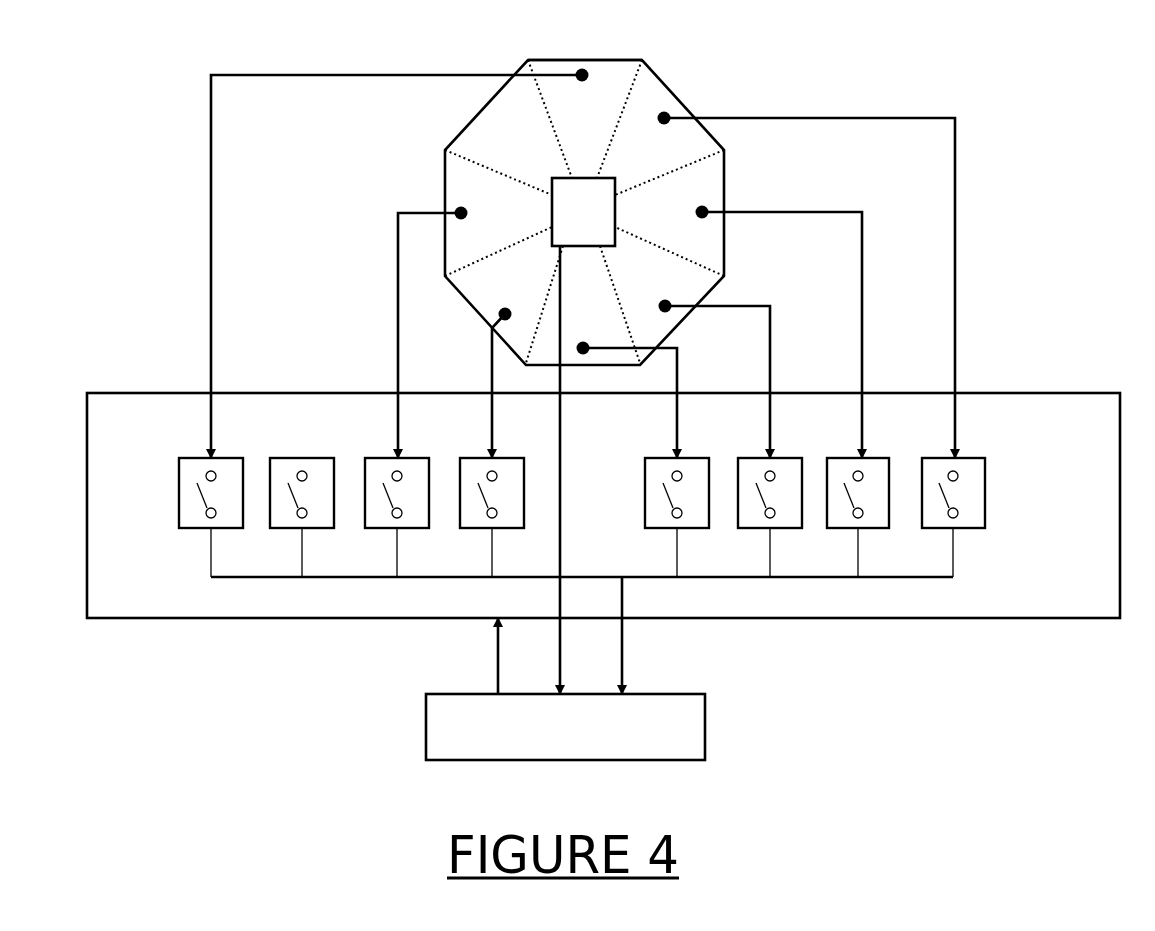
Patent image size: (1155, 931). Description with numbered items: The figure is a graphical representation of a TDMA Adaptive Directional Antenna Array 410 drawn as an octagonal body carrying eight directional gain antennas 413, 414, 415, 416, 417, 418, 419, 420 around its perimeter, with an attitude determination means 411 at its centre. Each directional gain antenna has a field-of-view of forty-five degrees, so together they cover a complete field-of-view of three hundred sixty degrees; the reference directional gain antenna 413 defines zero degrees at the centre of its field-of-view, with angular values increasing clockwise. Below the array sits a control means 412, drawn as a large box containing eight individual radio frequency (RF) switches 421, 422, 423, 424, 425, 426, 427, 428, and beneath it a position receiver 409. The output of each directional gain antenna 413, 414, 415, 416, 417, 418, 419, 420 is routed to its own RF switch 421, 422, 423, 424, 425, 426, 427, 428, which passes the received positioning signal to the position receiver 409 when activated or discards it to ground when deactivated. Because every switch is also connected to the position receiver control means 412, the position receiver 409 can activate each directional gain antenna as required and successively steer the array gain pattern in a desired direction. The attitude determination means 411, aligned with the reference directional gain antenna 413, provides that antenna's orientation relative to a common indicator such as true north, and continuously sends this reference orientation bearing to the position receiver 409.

The position receiver 409 is at (431, 764).
The TDMA Adaptive Directional Antenna Array 410 is at (644, 50).
The attitude determination means 411 is at (622, 207).
The control means 412 is at (107, 620).
The reference directional gain antenna 413 is at (520, 65).
The directional gain antenna 414 is at (547, 55).
The directional gain antenna 415 is at (665, 78).
The directional gain antenna 416 is at (725, 187).
The directional gain antenna 417 is at (690, 323).
The directional gain antenna 418 is at (597, 365).
The directional gain antenna 419 is at (487, 323).
The directional gain antenna 420 is at (440, 190).
The radio frequency (RF) switch 421 is at (198, 455).
The radio frequency (RF) switch 422 is at (290, 455).
The radio frequency (RF) switch 423 is at (385, 455).
The radio frequency (RF) switch 424 is at (482, 455).
The radio frequency (RF) switch 425 is at (688, 455).
The radio frequency (RF) switch 426 is at (780, 455).
The radio frequency (RF) switch 427 is at (873, 455).
The radio frequency (RF) switch 428 is at (968, 455).